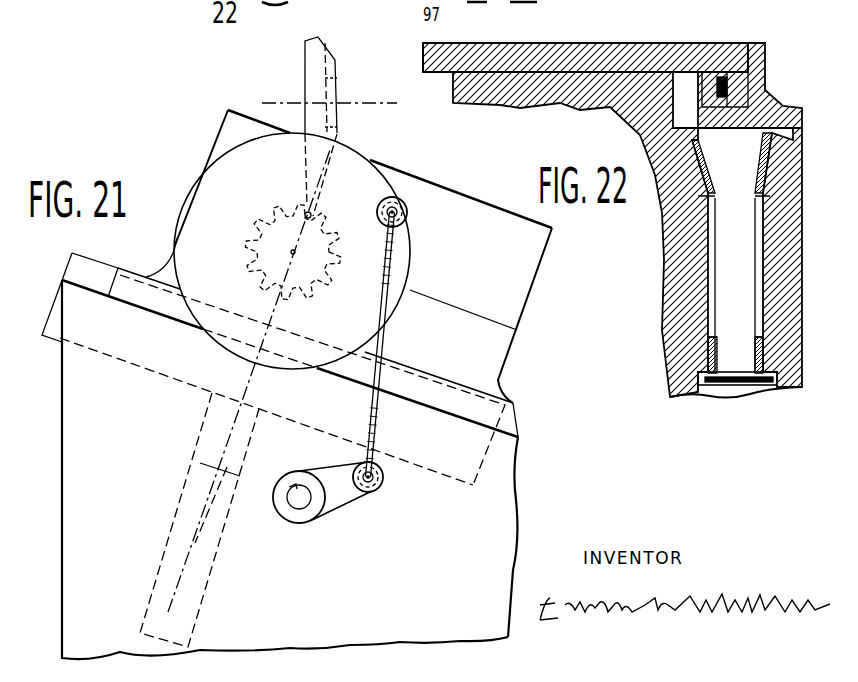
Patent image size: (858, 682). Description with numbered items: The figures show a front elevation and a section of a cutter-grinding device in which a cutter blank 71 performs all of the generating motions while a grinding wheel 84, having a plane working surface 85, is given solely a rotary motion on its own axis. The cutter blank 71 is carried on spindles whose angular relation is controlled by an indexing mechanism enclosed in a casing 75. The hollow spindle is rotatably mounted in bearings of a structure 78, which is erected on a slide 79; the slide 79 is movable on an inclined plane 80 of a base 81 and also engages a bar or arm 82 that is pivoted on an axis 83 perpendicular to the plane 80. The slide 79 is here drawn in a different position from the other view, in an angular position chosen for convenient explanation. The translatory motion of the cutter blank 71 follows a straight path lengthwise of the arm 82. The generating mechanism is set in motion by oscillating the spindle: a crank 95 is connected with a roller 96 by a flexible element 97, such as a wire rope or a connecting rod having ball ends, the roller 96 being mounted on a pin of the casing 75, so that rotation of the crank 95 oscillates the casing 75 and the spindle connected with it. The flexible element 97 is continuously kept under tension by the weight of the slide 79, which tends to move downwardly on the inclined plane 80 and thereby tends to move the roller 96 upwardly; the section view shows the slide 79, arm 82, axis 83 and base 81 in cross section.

In FIG. 21, the cutter blank 71 is at (280, 227).
In FIG. 21, the casing 75 is at (232, 170).
In FIG. 21, the structure 78 is at (448, 200).
In FIG. 21, the slide 79 is at (517, 408).
In FIG. 22, the slide 79 is at (640, 47).
In FIG. 21, the inclined plane 80 is at (92, 285).
In FIG. 21, the base 81 is at (78, 400).
In FIG. 22, the base 81 is at (547, 90).
In FIG. 21, the bar or arm 82 is at (82, 272).
In FIG. 22, the bar or arm 82 is at (767, 62).
In FIG. 21, the axis 83 is at (182, 565).
In FIG. 22, the axis 83 is at (733, 358).
In FIG. 21, the grinding wheel 84 is at (327, 62).
In FIG. 21, the plane working surface 85 is at (305, 202).
In FIG. 21, the crank 95 is at (338, 492).
In FIG. 21, the roller 96 is at (408, 217).
In FIG. 21, the flexible element 97 is at (385, 342).